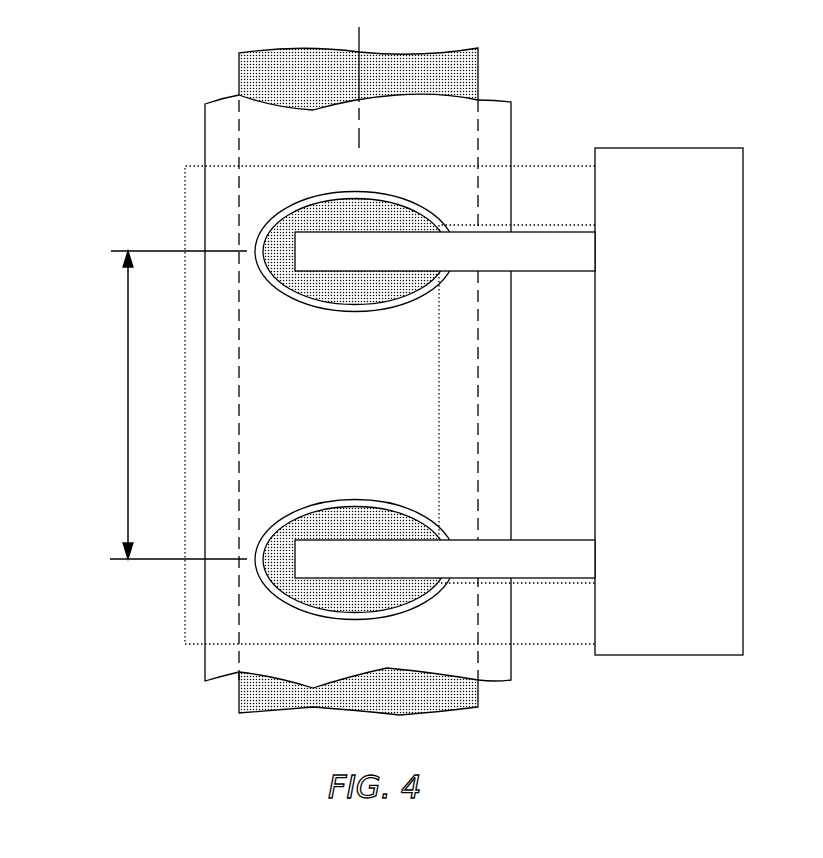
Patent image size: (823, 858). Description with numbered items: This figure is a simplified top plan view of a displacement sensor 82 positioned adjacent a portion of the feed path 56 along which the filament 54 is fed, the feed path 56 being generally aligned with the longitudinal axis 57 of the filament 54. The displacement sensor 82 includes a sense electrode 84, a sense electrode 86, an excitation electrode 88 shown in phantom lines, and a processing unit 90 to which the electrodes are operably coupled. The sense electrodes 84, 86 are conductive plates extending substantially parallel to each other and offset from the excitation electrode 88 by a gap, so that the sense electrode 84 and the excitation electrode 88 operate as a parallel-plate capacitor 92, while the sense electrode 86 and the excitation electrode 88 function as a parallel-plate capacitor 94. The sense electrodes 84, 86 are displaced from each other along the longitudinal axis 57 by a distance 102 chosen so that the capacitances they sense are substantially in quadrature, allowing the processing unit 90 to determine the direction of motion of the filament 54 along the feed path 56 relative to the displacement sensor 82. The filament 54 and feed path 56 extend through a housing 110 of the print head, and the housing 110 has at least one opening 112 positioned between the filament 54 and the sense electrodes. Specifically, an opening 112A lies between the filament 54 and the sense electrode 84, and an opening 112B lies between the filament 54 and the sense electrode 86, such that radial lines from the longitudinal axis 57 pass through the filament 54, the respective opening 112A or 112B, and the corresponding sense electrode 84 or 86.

The displacement sensor 82 is at (98, 88).
The housing 110 is at (213, 130).
The filament 54 is at (462, 72).
The longitudinal axis 57 is at (360, 33).
The feed path 56 is at (360, 133).
The excitation electrode 88 is at (535, 178).
The opening 112 is at (226, 220).
The processing unit 90 is at (663, 157).
The parallel-plate capacitor 92 is at (258, 213).
The opening 112A is at (365, 297).
The sense electrode 84 is at (315, 260).
The parallel-plate capacitor 94 is at (263, 594).
The opening 112B is at (368, 512).
The sense electrode 86 is at (317, 548).
The distance 102 is at (128, 400).